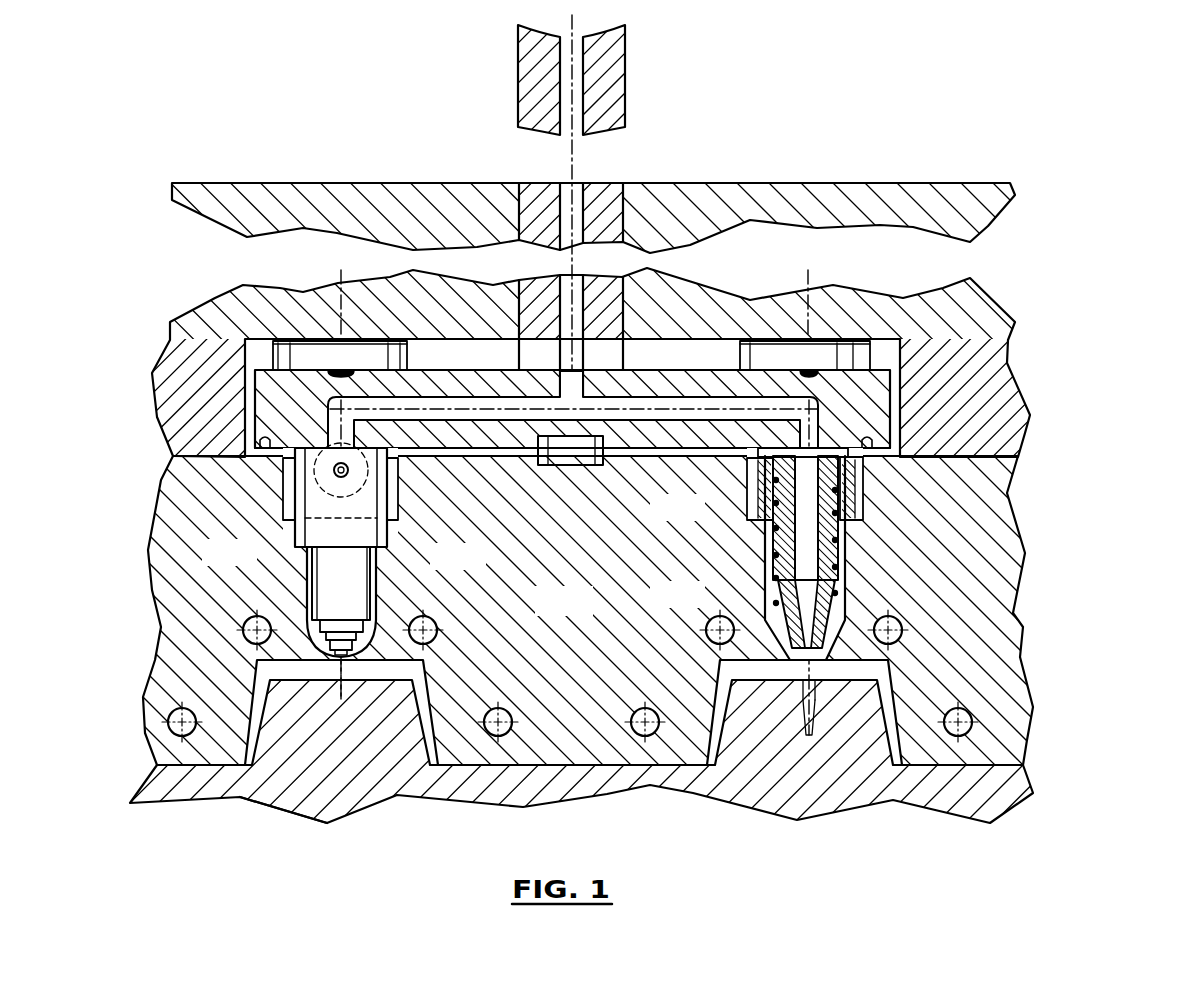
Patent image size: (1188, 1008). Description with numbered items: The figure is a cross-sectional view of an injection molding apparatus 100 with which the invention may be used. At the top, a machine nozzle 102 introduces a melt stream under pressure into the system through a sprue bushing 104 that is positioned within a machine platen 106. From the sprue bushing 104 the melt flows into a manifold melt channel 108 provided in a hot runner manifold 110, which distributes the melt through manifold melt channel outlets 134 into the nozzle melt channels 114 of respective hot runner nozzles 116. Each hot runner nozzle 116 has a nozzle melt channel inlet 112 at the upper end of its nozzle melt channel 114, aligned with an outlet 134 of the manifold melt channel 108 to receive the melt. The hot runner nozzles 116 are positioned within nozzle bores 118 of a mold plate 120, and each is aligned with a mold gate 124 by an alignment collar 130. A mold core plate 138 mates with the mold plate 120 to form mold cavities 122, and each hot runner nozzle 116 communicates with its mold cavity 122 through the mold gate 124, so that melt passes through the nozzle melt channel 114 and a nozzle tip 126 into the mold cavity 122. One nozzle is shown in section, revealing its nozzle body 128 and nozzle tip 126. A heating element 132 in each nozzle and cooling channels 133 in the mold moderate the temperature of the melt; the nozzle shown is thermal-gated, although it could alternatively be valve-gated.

The injection molding apparatus 100 is at (1043, 233).
The machine nozzle 102 is at (604, 68).
The sprue bushing 104 is at (608, 186).
The machine platen 106 is at (970, 316).
The manifold melt channel 108 is at (692, 398).
The hot runner manifold 110 is at (262, 417).
The nozzle melt channel inlet 112 is at (818, 436).
The nozzle melt channel 114 is at (852, 540).
The hot runner nozzle 116 is at (325, 576).
The nozzle bore 118 is at (374, 590).
The mold plate 120 is at (587, 614).
The mold cavity 122 is at (758, 668).
The mold gate 124 is at (806, 700).
The nozzle tip 126 is at (806, 665).
The nozzle body 128 is at (762, 492).
The alignment collar 130 is at (860, 488).
The heating element 132 is at (838, 580).
The cooling channel 133 is at (970, 712).
The manifold melt channel outlet 134 is at (878, 462).
The mold core plate 138 is at (276, 804).